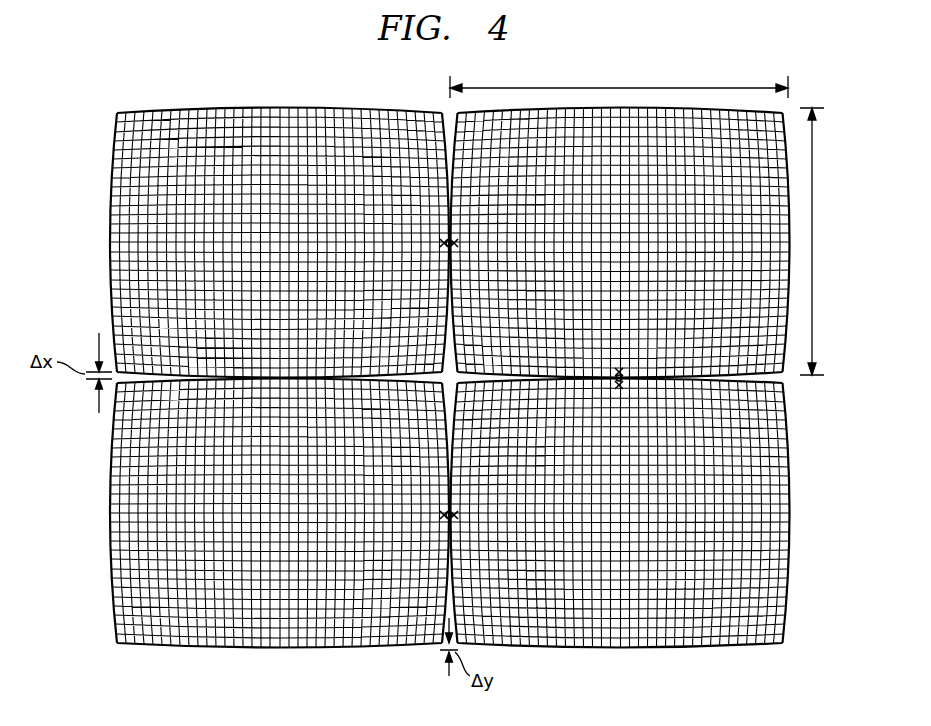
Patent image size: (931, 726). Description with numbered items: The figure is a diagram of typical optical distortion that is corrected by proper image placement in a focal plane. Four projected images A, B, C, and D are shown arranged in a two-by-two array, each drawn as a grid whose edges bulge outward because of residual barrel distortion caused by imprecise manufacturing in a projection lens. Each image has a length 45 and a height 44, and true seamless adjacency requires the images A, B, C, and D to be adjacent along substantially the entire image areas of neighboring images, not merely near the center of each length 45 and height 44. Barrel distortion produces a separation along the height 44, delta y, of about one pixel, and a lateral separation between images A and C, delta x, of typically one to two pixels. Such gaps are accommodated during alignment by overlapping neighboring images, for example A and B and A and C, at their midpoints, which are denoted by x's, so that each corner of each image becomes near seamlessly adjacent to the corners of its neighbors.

The height 44 is at (812, 172).
The length 45 is at (683, 88).
The image A is at (649, 243).
The image B is at (649, 513).
The image C is at (263, 243).
The image D is at (263, 513).